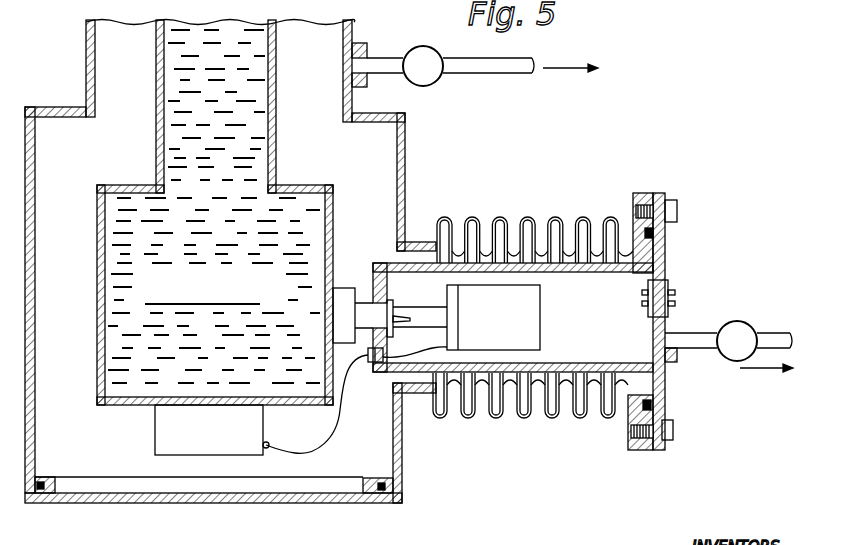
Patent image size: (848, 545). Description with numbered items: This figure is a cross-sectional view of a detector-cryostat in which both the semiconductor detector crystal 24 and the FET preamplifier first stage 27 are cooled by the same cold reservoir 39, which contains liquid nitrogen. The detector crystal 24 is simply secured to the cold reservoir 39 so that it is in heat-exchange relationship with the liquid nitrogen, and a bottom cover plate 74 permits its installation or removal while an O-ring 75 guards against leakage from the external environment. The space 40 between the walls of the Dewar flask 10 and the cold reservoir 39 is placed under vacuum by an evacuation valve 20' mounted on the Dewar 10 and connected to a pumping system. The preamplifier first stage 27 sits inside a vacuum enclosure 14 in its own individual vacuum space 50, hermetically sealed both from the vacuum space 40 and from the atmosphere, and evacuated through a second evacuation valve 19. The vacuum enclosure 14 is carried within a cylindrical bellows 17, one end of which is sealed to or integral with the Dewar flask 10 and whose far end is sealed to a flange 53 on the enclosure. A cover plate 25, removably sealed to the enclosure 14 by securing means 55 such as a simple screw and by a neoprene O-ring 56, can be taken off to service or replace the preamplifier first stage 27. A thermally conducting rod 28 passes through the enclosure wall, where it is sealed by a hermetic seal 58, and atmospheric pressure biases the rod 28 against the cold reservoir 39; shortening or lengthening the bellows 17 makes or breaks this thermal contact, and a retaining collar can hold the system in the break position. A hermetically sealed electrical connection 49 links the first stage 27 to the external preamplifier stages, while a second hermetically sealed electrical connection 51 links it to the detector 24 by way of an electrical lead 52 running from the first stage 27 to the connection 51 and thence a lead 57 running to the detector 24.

The Dewar flask 10 is at (85, 72).
The vacuum enclosure 14 is at (417, 262).
The cylindrical bellows 17 is at (474, 221).
The evacuation valve 19 is at (739, 326).
The evacuation valve 20' is at (525, 53).
The semiconductor detector crystal 24 is at (187, 426).
The cover plate 25 is at (668, 248).
The FET preamplifier first stage 27 is at (541, 314).
The thermally conducting rod 28 is at (345, 300).
The cold reservoir 39 is at (276, 168).
The vacuum space 40 is at (382, 150).
The hermetically sealed electrical connection 49 is at (672, 297).
The individual vacuum space 50 is at (548, 383).
The hermetically sealed electrical connection 51 is at (380, 364).
The electrical lead 52 is at (425, 377).
The flange 53 is at (645, 194).
The securing means 55 is at (678, 212).
The neoprene O-ring 56 is at (668, 405).
The lead 57 is at (318, 404).
The hermetic seal 58 is at (415, 336).
The bottom cover plate 74 is at (118, 504).
The O-ring 75 is at (383, 506).